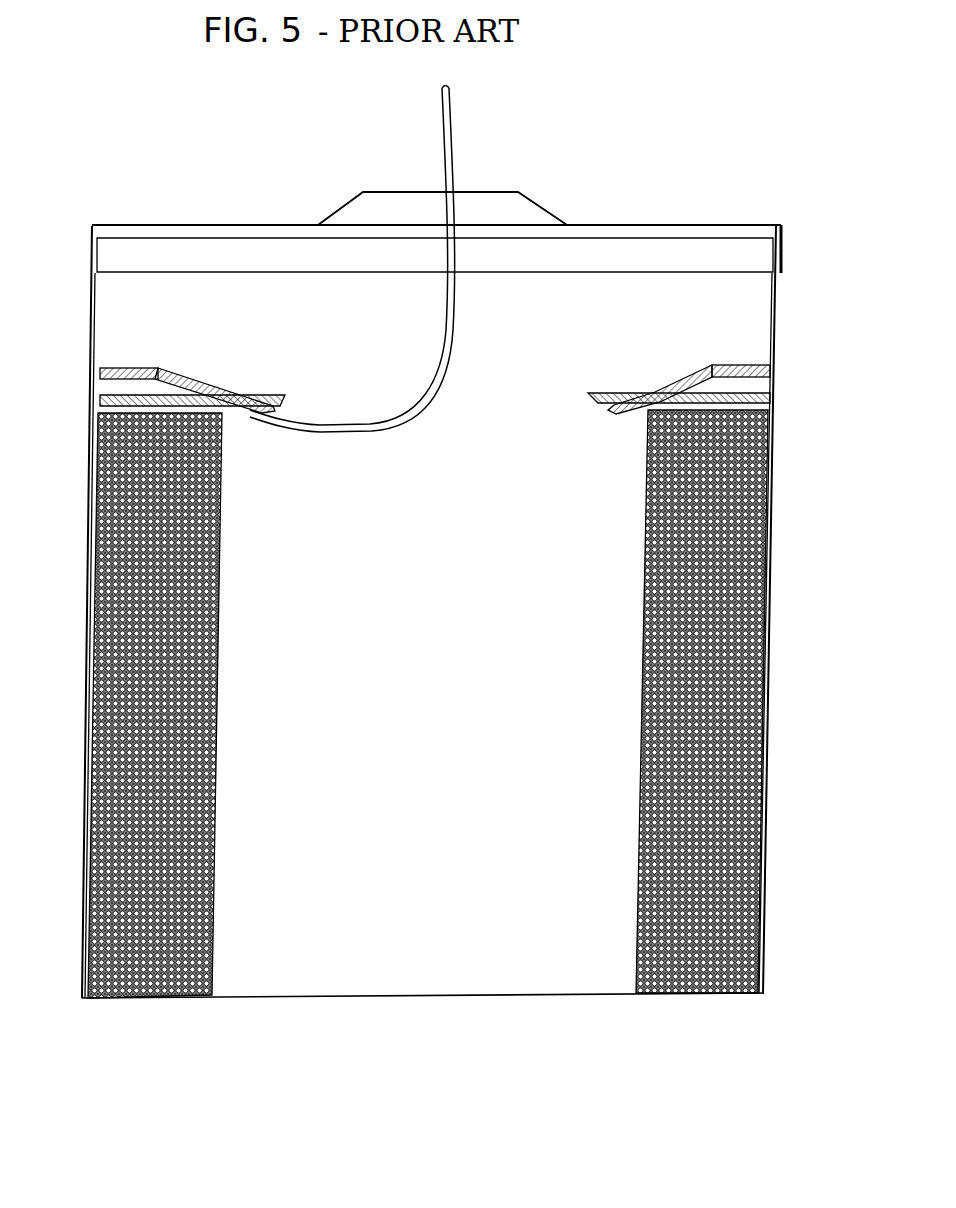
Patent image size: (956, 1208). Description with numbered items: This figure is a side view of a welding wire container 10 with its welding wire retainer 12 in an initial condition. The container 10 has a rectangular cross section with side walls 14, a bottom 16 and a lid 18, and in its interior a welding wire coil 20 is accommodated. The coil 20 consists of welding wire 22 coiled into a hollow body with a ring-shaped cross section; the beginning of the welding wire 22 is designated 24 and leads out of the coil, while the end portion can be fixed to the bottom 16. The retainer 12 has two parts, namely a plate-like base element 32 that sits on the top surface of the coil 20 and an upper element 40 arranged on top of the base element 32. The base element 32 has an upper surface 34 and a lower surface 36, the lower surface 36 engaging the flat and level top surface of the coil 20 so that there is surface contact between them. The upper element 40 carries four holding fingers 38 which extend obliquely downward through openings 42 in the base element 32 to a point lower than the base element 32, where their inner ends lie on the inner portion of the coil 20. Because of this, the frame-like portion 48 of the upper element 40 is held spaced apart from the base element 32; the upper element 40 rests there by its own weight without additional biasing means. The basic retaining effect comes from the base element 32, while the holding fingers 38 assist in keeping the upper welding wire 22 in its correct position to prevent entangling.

The welding wire container 10 is at (181, 176).
The welding wire retainer 12 is at (623, 359).
The side walls 14 is at (88, 648).
The bottom 16 is at (447, 996).
The lid 18 is at (673, 225).
The welding wire coil 20 is at (650, 770).
The welding wire 22 is at (447, 170).
The beginning of the welding wire 24 is at (445, 85).
The base element 32 is at (771, 397).
The upper surface 34 is at (272, 393).
The lower surface 36 is at (273, 409).
The holding fingers 38 is at (212, 386).
The upper element 40 is at (741, 365).
The openings 42 is at (632, 395).
The frame-like portion 48 is at (127, 368).